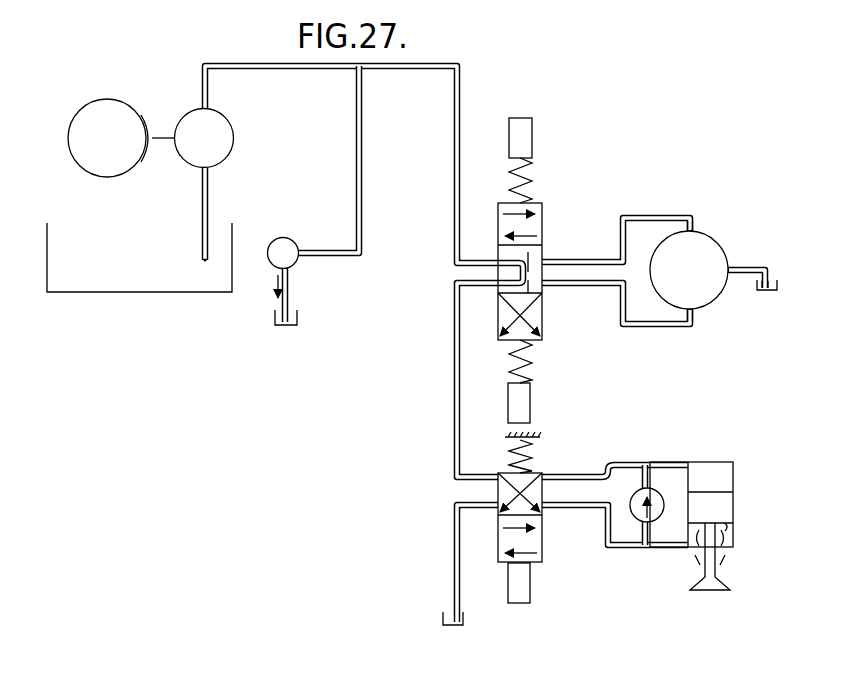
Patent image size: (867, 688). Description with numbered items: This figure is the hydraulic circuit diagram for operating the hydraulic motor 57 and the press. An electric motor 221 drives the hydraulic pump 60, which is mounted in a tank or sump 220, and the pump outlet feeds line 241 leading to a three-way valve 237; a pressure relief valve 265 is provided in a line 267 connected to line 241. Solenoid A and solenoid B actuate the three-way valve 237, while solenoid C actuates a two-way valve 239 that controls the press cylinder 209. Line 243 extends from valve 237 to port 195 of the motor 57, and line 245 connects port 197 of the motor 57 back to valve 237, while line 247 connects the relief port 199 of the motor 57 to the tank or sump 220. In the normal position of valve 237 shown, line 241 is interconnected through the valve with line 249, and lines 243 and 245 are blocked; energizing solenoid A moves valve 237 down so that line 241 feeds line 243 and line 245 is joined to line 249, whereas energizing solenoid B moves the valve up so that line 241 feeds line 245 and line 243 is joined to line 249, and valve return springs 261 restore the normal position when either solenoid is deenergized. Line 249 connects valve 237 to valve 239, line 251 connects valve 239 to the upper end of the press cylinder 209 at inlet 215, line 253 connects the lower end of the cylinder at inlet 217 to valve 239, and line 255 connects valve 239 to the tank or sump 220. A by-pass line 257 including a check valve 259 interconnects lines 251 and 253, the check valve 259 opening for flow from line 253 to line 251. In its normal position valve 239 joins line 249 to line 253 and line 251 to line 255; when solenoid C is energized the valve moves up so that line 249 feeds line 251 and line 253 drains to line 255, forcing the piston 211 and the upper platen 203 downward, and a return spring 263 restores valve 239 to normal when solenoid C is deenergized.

The electric motor 221 is at (120, 110).
The hydraulic pump 60 is at (233, 136).
The line 241 is at (302, 70).
The line 267 is at (362, 170).
The pressure relief valve 265 is at (297, 267).
The tank or sump 220 is at (160, 292).
The three-way valve 237 is at (543, 228).
The valve return springs 261 is at (530, 182).
The solenoid A is at (532, 135).
The solenoid B is at (513, 403).
The line 243 is at (589, 259).
The line 245 is at (622, 320).
The hydraulic motor 57 is at (708, 240).
The port 195 is at (692, 227).
The port 197 is at (693, 313).
The relief port 199 is at (742, 269).
The line 247 is at (778, 260).
The line 249 is at (455, 388).
The return spring 263 is at (510, 449).
The two-way valve 239 is at (543, 545).
The solenoid C is at (515, 585).
The line 255 is at (455, 520).
The line 251 is at (559, 475).
The line 253 is at (620, 550).
The by-pass line 257 is at (643, 475).
The check valve 259 is at (632, 497).
The hydraulic cylinder 209 is at (736, 466).
The inlet 215 is at (683, 462).
The inlet 217 is at (684, 550).
The piston 211 is at (733, 527).
The upper platen 203 is at (713, 593).